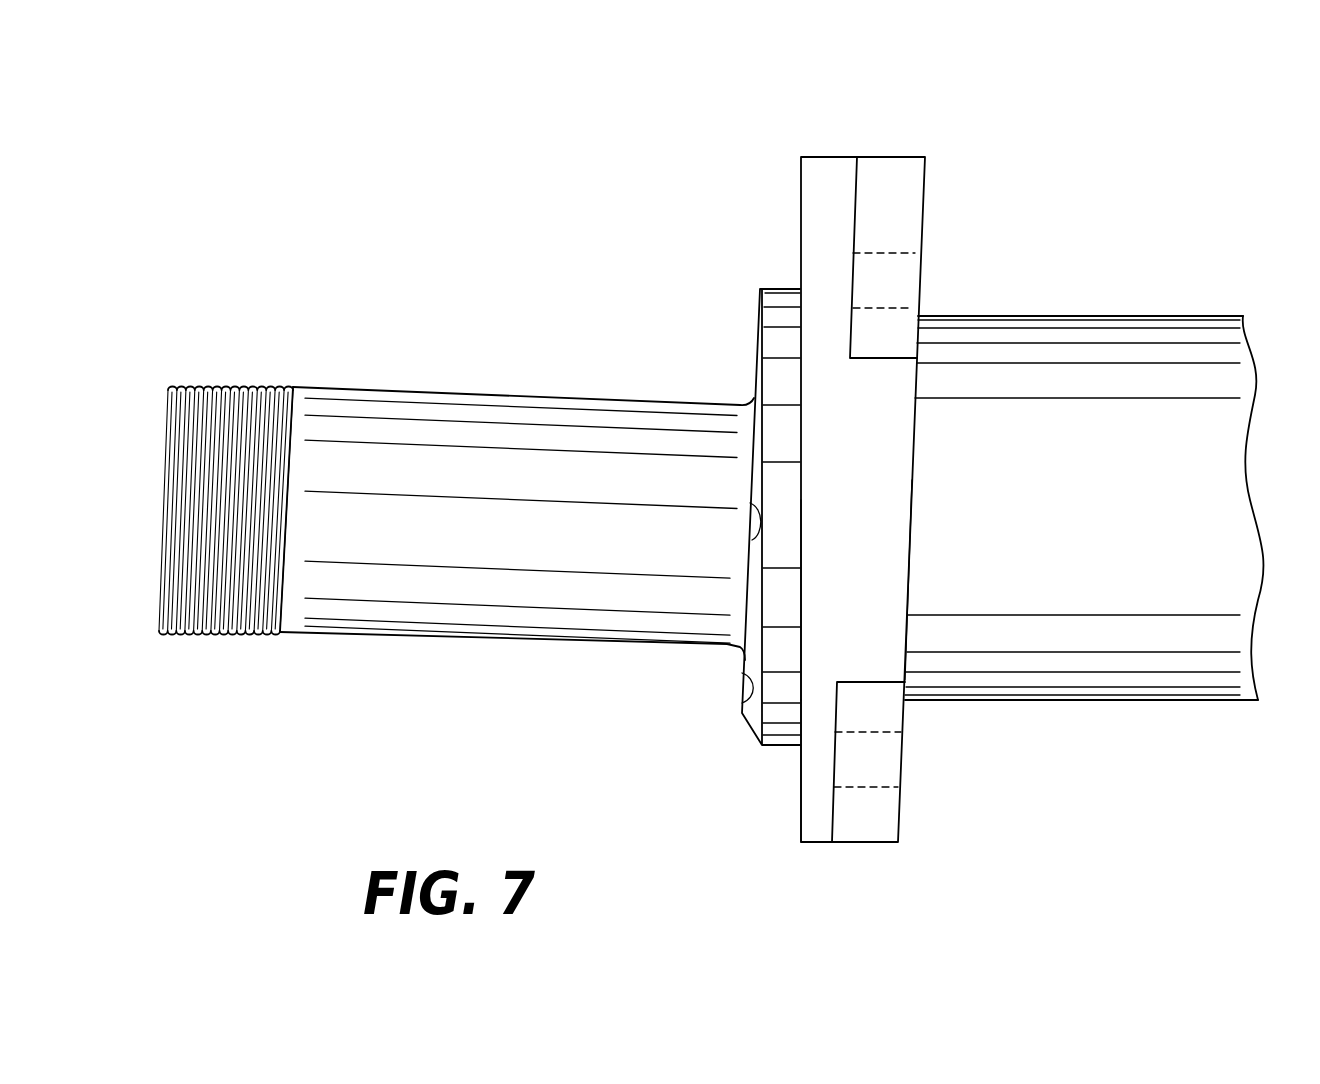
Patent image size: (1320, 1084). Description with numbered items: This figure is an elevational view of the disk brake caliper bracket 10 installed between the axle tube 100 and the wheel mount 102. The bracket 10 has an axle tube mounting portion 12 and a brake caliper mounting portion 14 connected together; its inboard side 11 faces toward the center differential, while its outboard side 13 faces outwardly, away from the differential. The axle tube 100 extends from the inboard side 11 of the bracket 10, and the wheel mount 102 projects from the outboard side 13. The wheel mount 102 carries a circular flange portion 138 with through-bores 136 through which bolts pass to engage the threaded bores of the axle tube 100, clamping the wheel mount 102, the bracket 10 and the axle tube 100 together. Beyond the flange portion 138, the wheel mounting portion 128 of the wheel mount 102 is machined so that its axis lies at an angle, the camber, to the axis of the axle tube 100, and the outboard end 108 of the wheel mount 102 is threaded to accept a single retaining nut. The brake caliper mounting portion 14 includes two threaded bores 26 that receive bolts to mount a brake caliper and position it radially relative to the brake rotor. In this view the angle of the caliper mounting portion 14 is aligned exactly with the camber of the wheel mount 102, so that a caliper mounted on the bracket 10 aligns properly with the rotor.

The disk brake caliper bracket 10 is at (862, 140).
The inboard side 11 is at (907, 637).
The axle tube mounting portion 12 is at (820, 708).
The outboard side 13 is at (800, 591).
The brake caliper mounting portion 14 is at (895, 215).
The threaded bores 26 is at (885, 253).
The axle tube 100 is at (1080, 338).
The wheel mount 102 is at (446, 384).
The outboard end 108 is at (213, 388).
The wheel mounting portion 128 is at (547, 418).
The through-bores 136 is at (753, 688).
The circular flange portion 138 is at (782, 300).